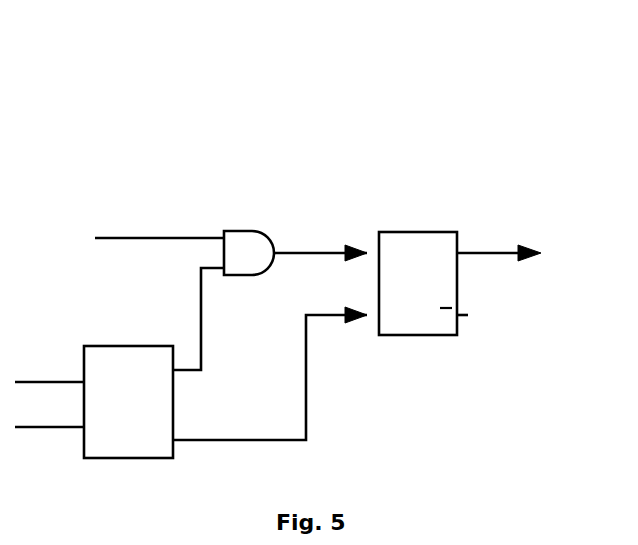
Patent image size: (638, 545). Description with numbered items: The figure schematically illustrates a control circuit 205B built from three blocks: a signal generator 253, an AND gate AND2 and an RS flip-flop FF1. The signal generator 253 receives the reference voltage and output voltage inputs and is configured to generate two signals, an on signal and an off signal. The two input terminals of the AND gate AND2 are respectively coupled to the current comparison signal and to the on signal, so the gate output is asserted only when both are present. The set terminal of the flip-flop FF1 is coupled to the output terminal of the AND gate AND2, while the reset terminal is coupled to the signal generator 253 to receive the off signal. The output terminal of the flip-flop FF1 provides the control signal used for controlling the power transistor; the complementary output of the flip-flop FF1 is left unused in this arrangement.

The control circuit 205B is at (527, 163).
The signal generator 253 is at (118, 458).
The RS flip-flop FF1 is at (423, 275).
The AND gate AND2 is at (249, 253).